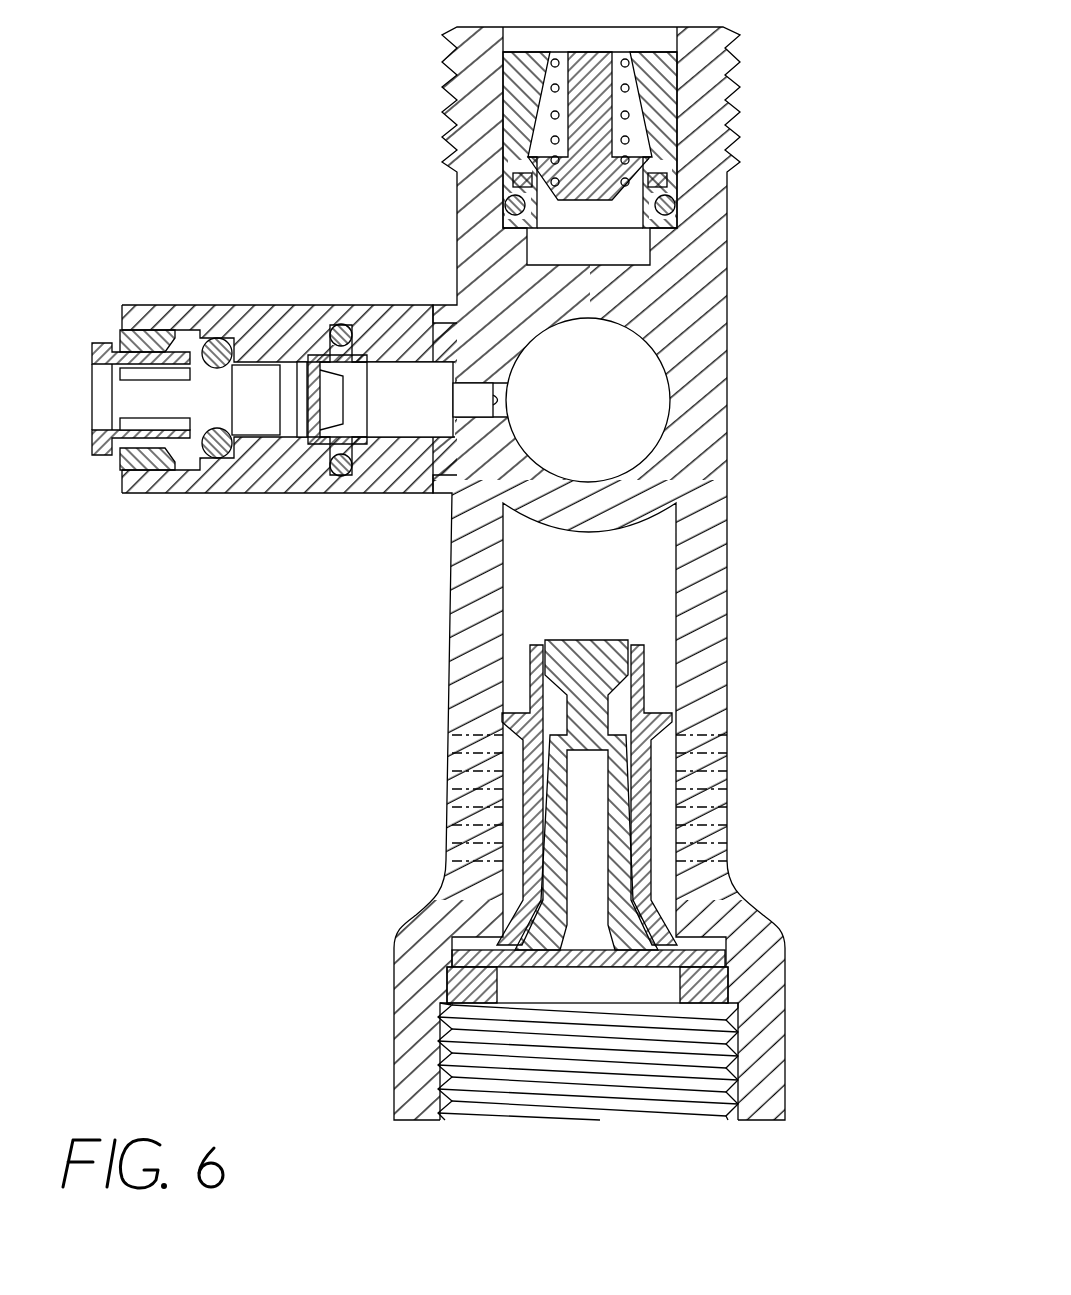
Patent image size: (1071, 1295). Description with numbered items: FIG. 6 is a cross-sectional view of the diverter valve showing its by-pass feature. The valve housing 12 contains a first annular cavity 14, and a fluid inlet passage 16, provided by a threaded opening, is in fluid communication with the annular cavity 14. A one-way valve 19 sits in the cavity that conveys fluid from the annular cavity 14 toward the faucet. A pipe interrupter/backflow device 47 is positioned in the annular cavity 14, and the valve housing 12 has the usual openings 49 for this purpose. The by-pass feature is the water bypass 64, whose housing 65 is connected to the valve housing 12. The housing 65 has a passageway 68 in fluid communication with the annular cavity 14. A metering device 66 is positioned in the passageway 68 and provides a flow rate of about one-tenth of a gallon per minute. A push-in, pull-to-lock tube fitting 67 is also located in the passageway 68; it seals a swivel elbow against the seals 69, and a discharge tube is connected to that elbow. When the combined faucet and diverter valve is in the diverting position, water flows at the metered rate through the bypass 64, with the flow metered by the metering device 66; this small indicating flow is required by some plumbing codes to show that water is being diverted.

The valve housing 12 is at (720, 537).
The first annular cavity 14 is at (645, 390).
The fluid inlet passage 16 is at (485, 1105).
The one-way valve 19 is at (675, 80).
The pipe interrupter/backflow device 47 is at (655, 783).
The openings 49 is at (722, 810).
The water bypass 64 is at (272, 315).
The housing 65 is at (170, 308).
The metering device 66 is at (322, 450).
The tube fitting 67 is at (106, 448).
The passageway 68 is at (400, 415).
The seals 69 is at (358, 312).